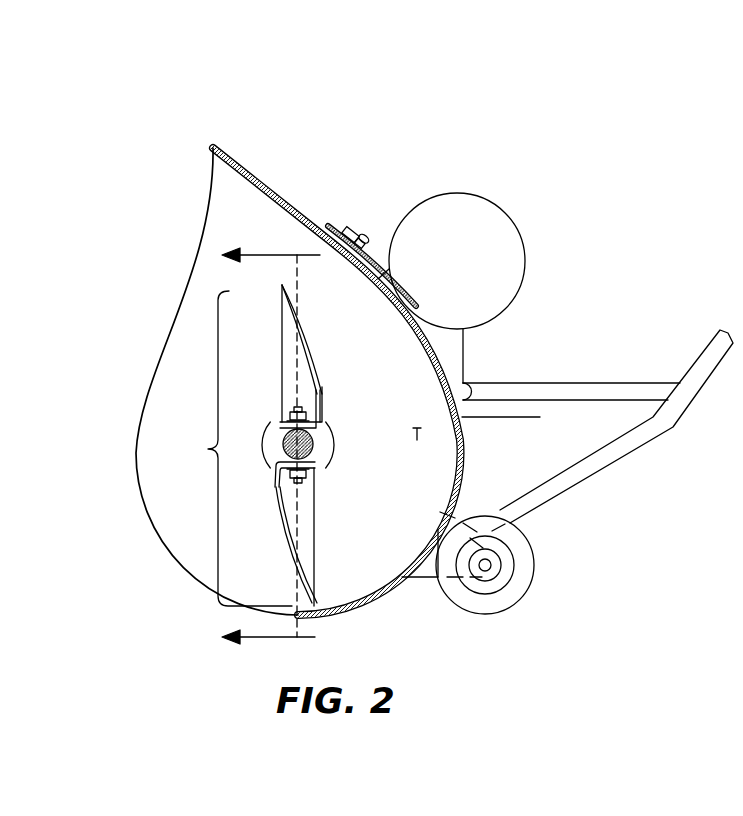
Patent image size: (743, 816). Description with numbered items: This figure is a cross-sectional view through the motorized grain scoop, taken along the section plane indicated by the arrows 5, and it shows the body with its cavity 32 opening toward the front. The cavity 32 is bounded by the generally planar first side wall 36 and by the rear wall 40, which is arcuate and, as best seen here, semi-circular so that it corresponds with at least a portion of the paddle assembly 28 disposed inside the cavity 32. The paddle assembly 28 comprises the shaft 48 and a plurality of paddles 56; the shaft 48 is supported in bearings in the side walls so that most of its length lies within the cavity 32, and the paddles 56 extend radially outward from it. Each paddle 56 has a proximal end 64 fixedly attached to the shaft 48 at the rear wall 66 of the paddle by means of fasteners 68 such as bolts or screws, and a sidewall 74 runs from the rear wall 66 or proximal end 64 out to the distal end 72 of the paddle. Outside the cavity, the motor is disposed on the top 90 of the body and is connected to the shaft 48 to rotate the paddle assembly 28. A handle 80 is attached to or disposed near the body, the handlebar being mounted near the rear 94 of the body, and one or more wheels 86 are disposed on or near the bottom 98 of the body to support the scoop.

The section line 5- 5 is at (261, 446).
The paddle assembly 28 is at (228, 448).
The cavity 32 is at (420, 437).
The first side wall 36 is at (186, 378).
The rear wall 40 is at (397, 361).
The shaft 48 is at (315, 441).
The paddles 56 is at (313, 347).
The proximal end 64 is at (320, 378).
The rear wall of the paddles 66 is at (321, 414).
The fasteners 68 is at (294, 410).
The distal end 72 is at (318, 583).
The sidewall 74 is at (290, 342).
The handle 80 is at (346, 229).
The wheels 86 is at (494, 612).
The top of the body 90 is at (367, 268).
The rear of the body 94 is at (540, 417).
The bottom of the body 98 is at (437, 578).